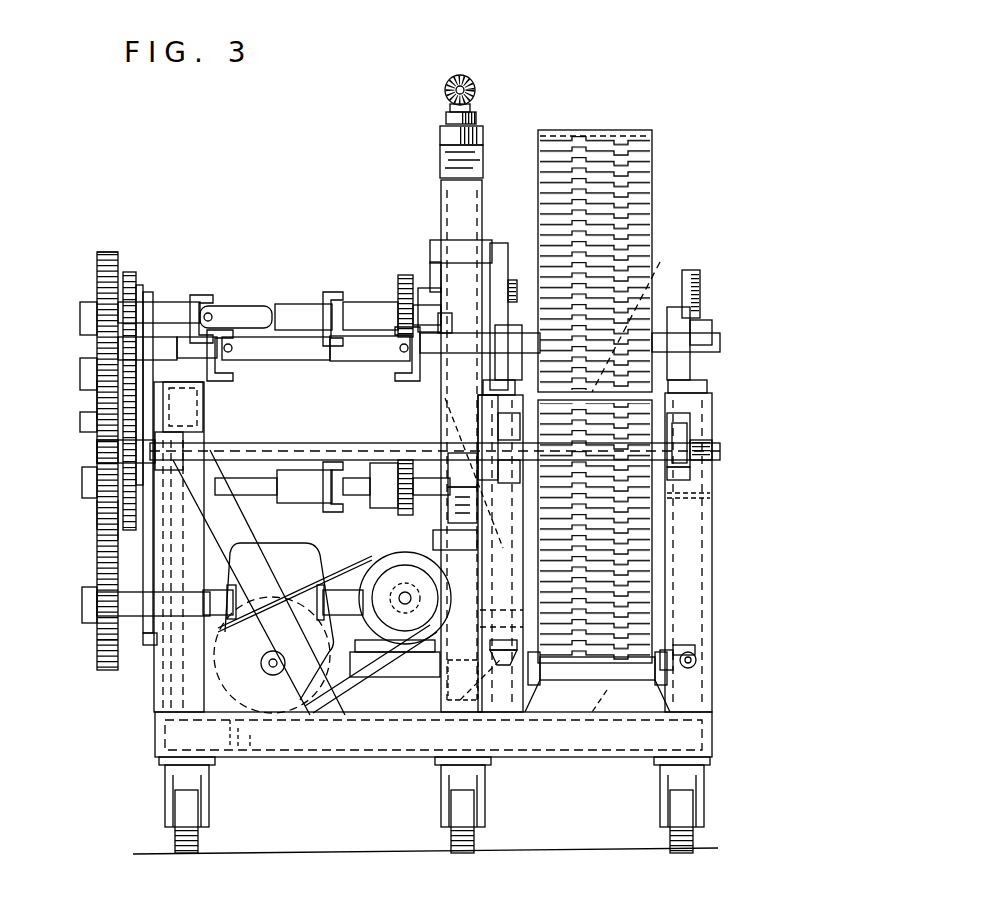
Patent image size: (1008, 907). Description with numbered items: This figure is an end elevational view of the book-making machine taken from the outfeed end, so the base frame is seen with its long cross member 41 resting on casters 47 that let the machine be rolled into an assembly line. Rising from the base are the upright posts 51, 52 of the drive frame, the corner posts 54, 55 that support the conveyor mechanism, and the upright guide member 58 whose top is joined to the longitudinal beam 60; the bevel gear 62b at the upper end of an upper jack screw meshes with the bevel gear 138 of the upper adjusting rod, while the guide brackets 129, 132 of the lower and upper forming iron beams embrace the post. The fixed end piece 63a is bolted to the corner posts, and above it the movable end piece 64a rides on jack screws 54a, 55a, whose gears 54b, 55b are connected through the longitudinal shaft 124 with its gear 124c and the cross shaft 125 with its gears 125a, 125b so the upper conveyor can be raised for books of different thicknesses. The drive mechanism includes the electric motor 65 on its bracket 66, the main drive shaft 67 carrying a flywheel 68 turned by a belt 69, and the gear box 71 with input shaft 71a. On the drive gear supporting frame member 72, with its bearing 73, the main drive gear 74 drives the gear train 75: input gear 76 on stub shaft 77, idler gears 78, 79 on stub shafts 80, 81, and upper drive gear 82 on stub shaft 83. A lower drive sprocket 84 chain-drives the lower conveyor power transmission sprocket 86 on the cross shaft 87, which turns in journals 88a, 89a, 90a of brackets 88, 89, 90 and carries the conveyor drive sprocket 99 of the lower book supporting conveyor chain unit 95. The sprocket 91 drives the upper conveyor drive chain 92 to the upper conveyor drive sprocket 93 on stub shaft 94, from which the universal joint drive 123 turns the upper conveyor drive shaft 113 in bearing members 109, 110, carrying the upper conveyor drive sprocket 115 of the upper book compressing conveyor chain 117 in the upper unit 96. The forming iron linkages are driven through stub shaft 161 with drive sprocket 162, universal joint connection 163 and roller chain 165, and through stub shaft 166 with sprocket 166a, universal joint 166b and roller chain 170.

The long cross member 41 is at (532, 757).
The casters 47 is at (218, 816).
The upright post 51 is at (160, 690).
The upright post 52 is at (204, 396).
The corner post 54 is at (700, 692).
The jack screw 54a is at (695, 272).
The gear 54b is at (695, 648).
The corner post 55 is at (520, 692).
The jack screw 55a is at (503, 268).
The gear 55b is at (482, 670).
The upright guide member 58 is at (442, 188).
The longitudinal beam 60 is at (440, 152).
The bevel gear 62b is at (476, 112).
The end piece 63a is at (662, 420).
The end piece 64a is at (656, 320).
The electric motor 65 is at (372, 557).
The bracket 66 is at (403, 670).
The main drive shaft 67 is at (273, 672).
The flywheel 68 is at (350, 656).
The belt 69 is at (305, 585).
The gear box 71 is at (279, 609).
The input shaft 71a is at (82, 603).
The drive gear supporting frame member 72 is at (150, 664).
The bearing 73 is at (234, 553).
The main drive gear 74 is at (100, 648).
The gear train 75 is at (104, 248).
The input gear 76 is at (100, 512).
The stub shaft 77 is at (82, 470).
The idler gear 78 is at (100, 457).
The idler gear 79 is at (100, 398).
The stub shaft 80 is at (80, 425).
The stub shaft 81 is at (80, 379).
The upper drive gear 82 is at (97, 262).
The stub shaft 83 is at (80, 310).
The lower drive sprocket 84 is at (105, 533).
The lower conveyor power transmission sprocket 86 is at (100, 445).
The cross shaft 87 is at (260, 438).
The bracket 88 is at (150, 292).
The journal 88a is at (182, 434).
The bracket 89 is at (496, 406).
The journal 89a is at (498, 432).
The bracket 90 is at (695, 470).
The journal 90a is at (687, 434).
The sprocket 91 is at (130, 272).
The upper conveyor drive chain 92 is at (138, 286).
The upper conveyor drive sprocket 93 is at (100, 349).
The stub shaft 94 is at (170, 338).
The lower book supporting conveyor chain unit 95 is at (660, 600).
The upper book compressing conveyor chain unit 96 is at (590, 128).
The conveyor drive sprocket 99 is at (700, 490).
The bearing member 109 is at (720, 356).
The bearing member 110 is at (514, 324).
The upper conveyor drive shaft 113 is at (712, 326).
The upper conveyor drive sprocket 115 is at (640, 315).
The upper book compressing conveyor chain 117 is at (648, 128).
The universal joint drive 123 is at (384, 354).
The longitudinal shaft 124 is at (698, 664).
The gear 124c is at (696, 659).
The cross shaft 125 is at (597, 697).
The gear 125a is at (625, 699).
The gear 125b is at (474, 571).
The guide bracket 129 is at (400, 610).
The guide bracket 132 is at (435, 240).
The bevel gear 138 is at (455, 78).
The stub shaft 161 is at (414, 518).
The drive sprocket 162 is at (415, 508).
The universal joint connection 163 is at (308, 496).
The roller chain 165 is at (397, 516).
The stub shaft 166 is at (430, 270).
The sprocket 166a is at (400, 302).
The universal joint 166b is at (300, 302).
The roller chain 170 is at (420, 297).